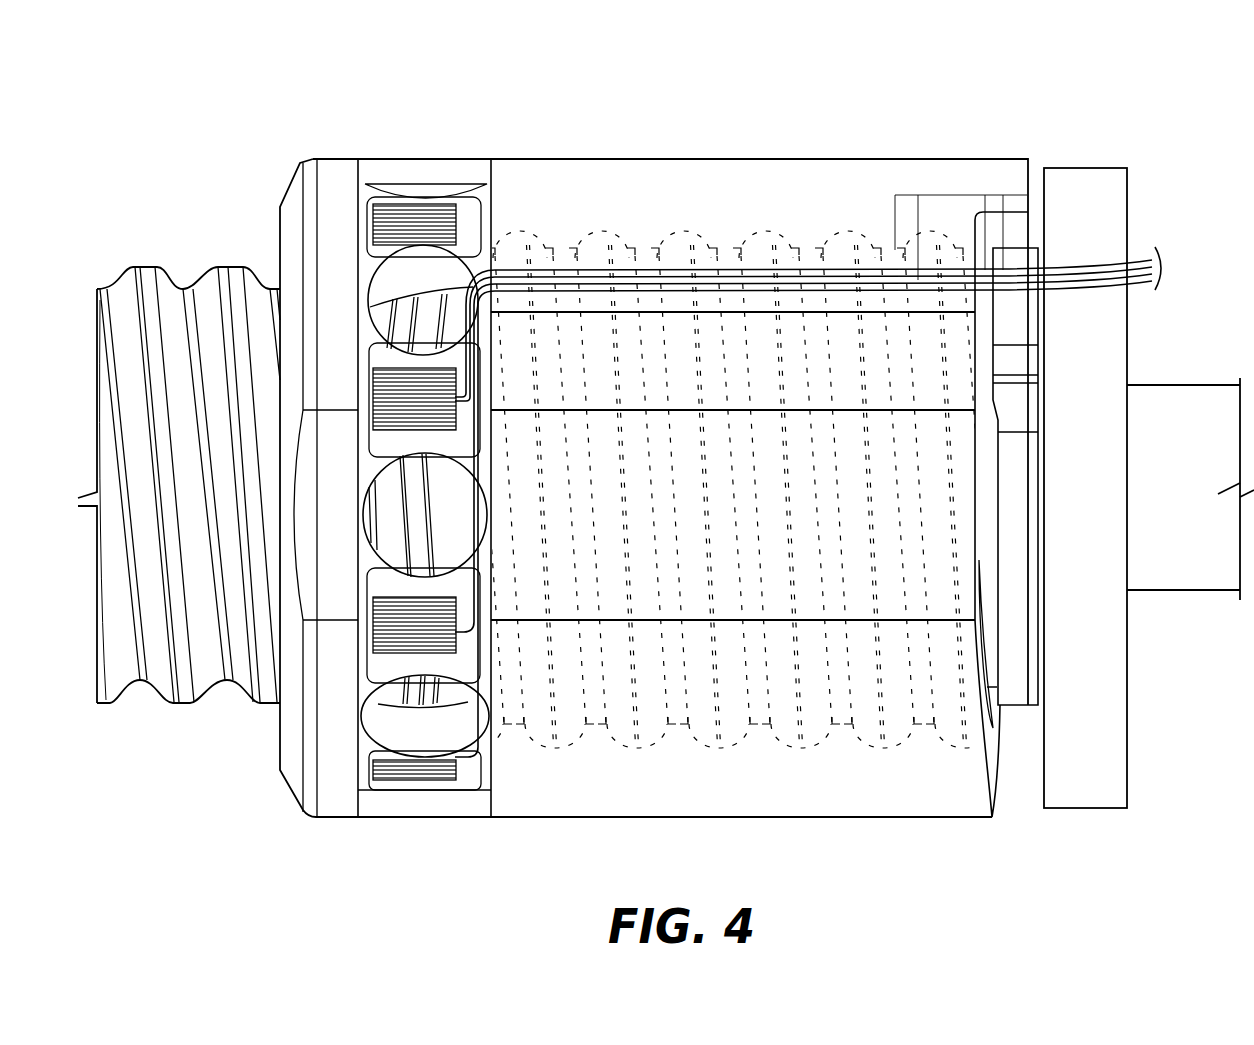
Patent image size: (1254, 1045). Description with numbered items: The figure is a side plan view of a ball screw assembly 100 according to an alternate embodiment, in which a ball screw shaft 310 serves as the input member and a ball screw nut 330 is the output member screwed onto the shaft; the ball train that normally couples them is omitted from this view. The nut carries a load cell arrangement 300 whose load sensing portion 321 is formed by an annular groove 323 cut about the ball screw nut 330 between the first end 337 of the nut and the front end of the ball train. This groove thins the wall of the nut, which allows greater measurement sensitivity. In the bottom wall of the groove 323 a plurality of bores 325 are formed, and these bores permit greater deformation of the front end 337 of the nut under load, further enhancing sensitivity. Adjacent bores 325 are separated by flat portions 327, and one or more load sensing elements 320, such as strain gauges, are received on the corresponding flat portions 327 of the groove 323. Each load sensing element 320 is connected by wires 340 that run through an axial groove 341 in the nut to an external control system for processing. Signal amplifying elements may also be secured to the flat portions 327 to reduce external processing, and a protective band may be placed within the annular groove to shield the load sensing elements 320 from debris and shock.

The ball screw assembly 100 is at (236, 108).
The bearing assembly 300 is at (484, 142).
The shaft 310 is at (179, 306).
The load sensing element 320 is at (420, 220).
The load sensing portion 321 is at (449, 830).
The annular groove 323 is at (484, 808).
The bores 325 is at (398, 272).
The flat portions 327 is at (468, 776).
The ball screw nut 330 is at (811, 184).
The first end of the nut 337 is at (288, 778).
The wires 340 is at (864, 272).
The axial groove 341 is at (653, 304).